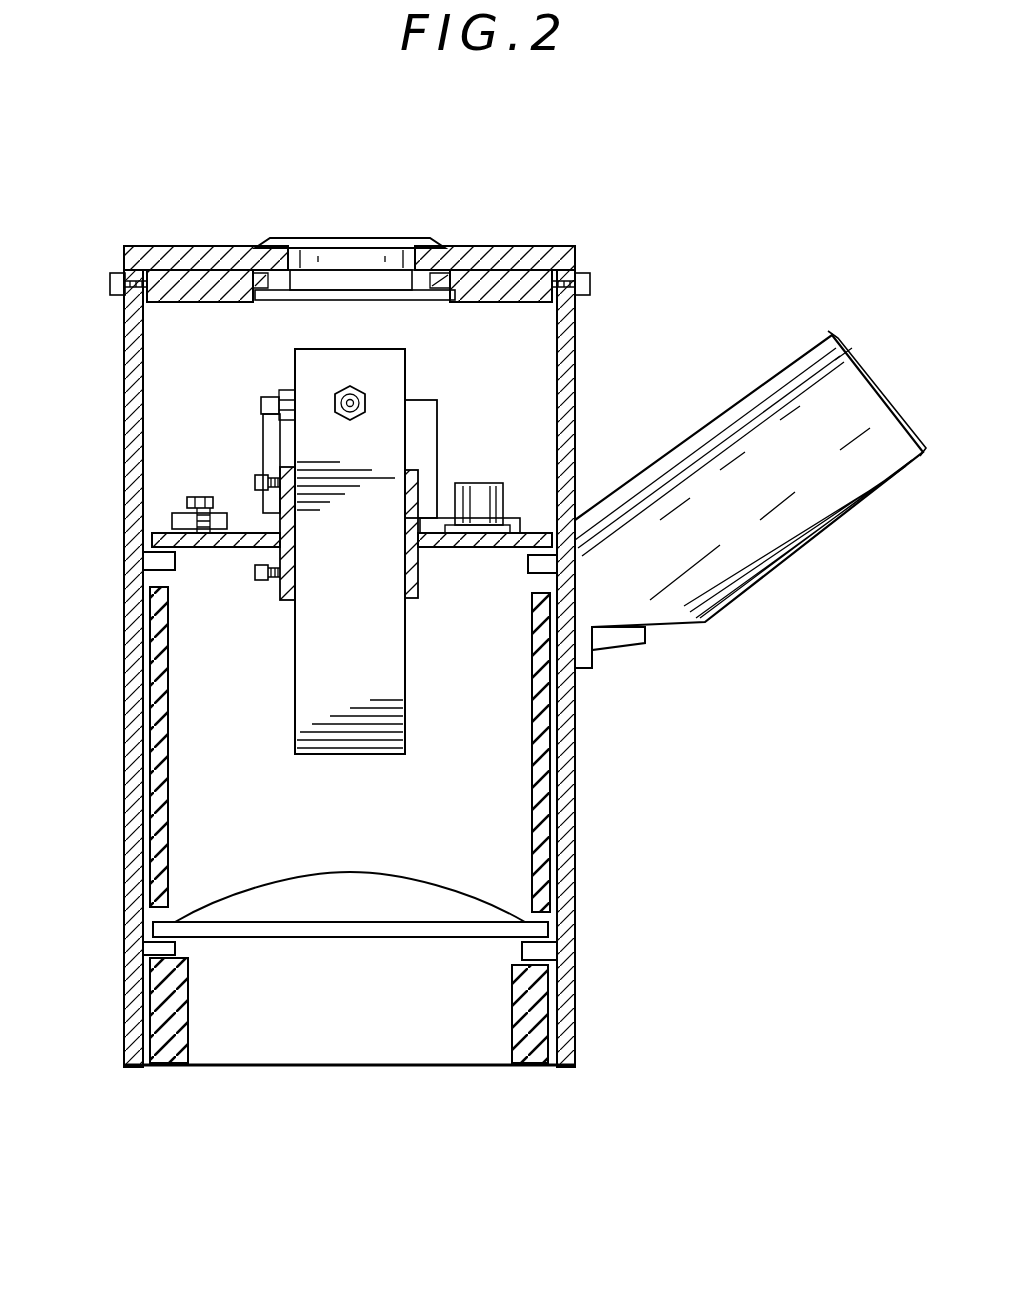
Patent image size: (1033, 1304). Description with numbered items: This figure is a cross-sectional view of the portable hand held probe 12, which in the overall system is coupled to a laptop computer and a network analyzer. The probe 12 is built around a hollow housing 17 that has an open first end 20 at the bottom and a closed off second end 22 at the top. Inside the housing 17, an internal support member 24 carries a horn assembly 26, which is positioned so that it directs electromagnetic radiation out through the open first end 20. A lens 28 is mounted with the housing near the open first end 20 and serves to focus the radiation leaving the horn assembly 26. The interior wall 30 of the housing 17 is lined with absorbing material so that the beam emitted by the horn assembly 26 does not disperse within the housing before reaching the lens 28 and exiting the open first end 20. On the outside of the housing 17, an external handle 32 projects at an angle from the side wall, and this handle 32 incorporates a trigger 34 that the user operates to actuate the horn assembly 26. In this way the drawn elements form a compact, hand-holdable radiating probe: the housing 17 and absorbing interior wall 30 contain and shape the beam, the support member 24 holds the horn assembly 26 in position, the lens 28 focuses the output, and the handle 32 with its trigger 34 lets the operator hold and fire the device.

The portable hand held probe 12 is at (653, 268).
The hollow housing 17 is at (124, 392).
The open first end 20 is at (338, 1068).
The closed off second end 22 is at (346, 244).
The internal support member 24 is at (216, 532).
The horn assembly 26 is at (318, 755).
The lens 28 is at (406, 872).
The interior wall 30 is at (575, 398).
The external handle 32 is at (857, 360).
The trigger 34 is at (602, 648).